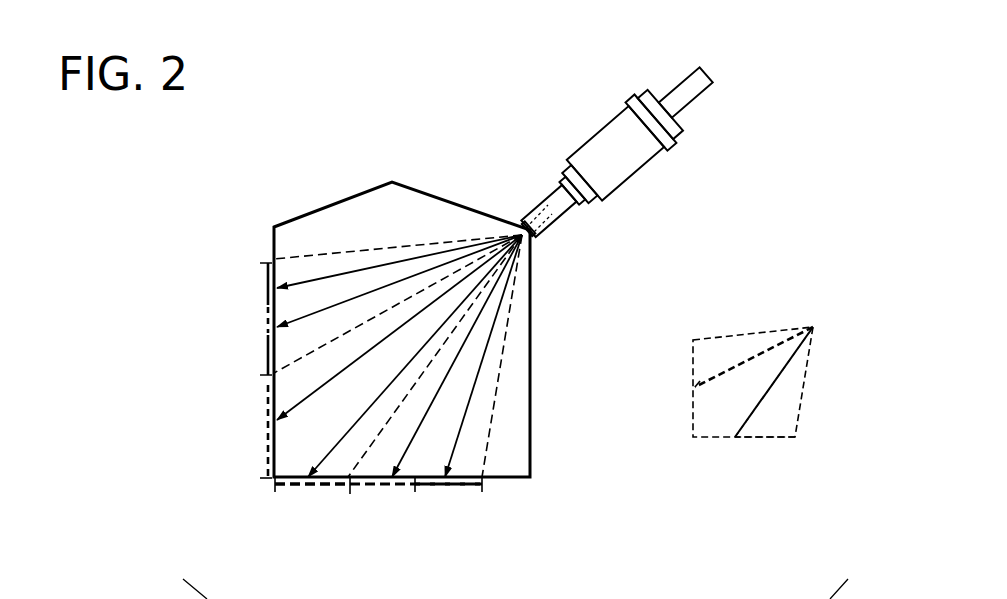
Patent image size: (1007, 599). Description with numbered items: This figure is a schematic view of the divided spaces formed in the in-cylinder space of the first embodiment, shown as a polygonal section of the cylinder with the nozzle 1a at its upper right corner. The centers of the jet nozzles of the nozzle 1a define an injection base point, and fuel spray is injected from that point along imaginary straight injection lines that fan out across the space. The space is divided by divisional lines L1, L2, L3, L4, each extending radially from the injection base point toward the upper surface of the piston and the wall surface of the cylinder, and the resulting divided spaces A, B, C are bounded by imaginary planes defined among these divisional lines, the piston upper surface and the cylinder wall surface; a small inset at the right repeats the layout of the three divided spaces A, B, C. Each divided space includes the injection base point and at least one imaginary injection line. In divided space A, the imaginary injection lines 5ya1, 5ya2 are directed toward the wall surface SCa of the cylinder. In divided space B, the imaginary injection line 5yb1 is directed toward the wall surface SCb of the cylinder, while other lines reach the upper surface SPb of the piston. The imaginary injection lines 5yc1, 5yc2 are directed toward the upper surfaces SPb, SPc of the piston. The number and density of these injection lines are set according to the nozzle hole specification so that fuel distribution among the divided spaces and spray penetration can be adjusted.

The nozzle 1a is at (520, 233).
The imaginary injection line 5ya1 is at (312, 280).
The imaginary injection line 5ya2 is at (310, 315).
The imaginary injection line 5yb1 is at (303, 400).
The imaginary injection line 5yc1 is at (415, 488).
The imaginary injection line 5yc2 is at (458, 488).
The divisional line L1 is at (347, 252).
The divisional line L2 is at (300, 360).
The divisional line L3 is at (370, 488).
The divisional line L4 is at (500, 373).
The wall surface SCa is at (266, 276).
The wall surface SCb is at (268, 438).
The upper surface SPb is at (305, 490).
The upper surface SPc is at (473, 492).
The divided space A is at (753, 382).
The divided space B is at (765, 383).
The divided space C is at (765, 420).